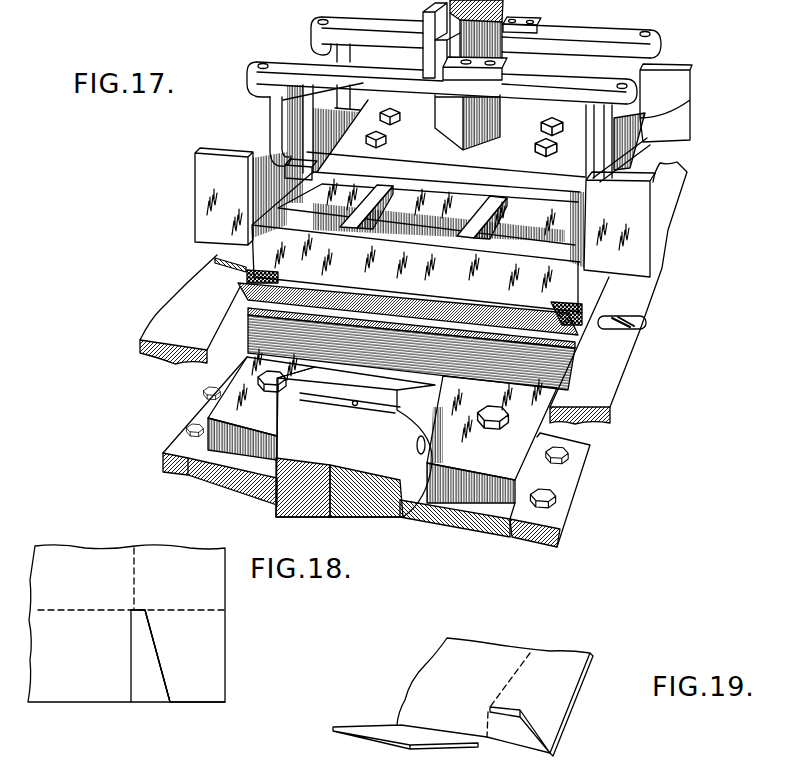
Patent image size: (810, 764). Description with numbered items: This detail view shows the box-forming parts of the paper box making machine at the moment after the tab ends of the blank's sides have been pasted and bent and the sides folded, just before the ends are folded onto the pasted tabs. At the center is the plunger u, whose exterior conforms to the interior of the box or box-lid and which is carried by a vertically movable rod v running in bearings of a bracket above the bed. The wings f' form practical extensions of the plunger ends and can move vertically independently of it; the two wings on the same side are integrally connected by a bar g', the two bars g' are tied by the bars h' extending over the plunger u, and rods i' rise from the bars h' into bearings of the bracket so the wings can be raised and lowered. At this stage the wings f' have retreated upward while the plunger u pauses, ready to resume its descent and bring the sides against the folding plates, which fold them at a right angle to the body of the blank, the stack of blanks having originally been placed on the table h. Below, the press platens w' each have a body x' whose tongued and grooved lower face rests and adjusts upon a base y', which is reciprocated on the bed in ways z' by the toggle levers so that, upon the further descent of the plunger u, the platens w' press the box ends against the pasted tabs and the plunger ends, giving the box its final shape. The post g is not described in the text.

The table h is at (486, 30).
The bars h' is at (442, 80).
The rods i' is at (440, 40).
The spring post g is at (268, 131).
The bar g' is at (649, 160).
The vertically movable rod v is at (450, 113).
The wings f' is at (434, 170).
The plunger u is at (418, 242).
The press platens w' is at (457, 336).
The body x' is at (423, 426).
The base y' is at (336, 454).
The ways z' is at (364, 486).